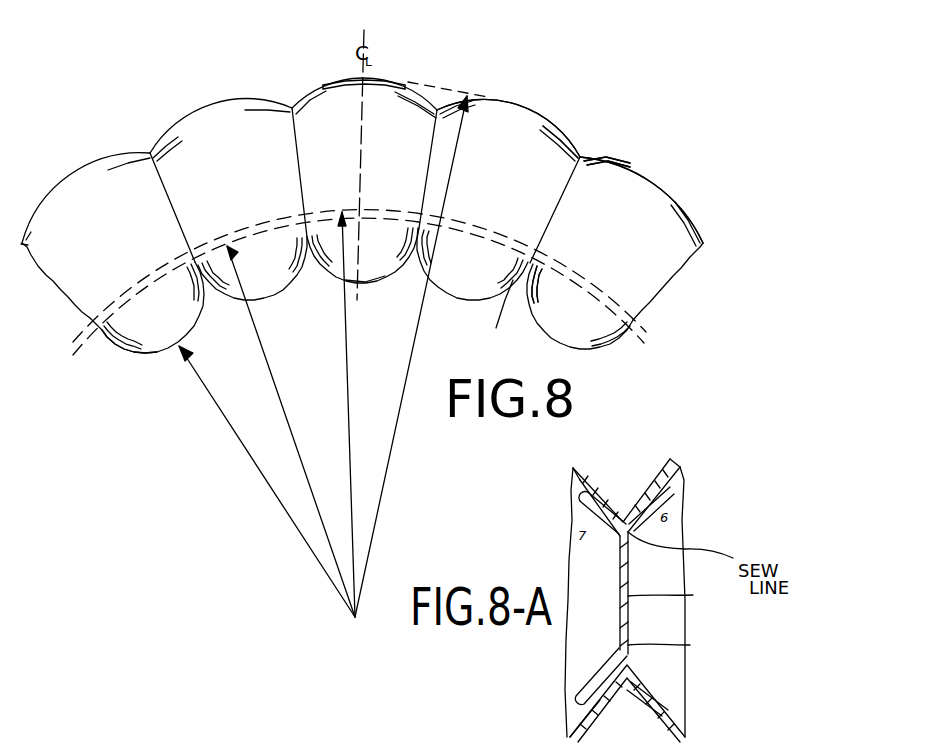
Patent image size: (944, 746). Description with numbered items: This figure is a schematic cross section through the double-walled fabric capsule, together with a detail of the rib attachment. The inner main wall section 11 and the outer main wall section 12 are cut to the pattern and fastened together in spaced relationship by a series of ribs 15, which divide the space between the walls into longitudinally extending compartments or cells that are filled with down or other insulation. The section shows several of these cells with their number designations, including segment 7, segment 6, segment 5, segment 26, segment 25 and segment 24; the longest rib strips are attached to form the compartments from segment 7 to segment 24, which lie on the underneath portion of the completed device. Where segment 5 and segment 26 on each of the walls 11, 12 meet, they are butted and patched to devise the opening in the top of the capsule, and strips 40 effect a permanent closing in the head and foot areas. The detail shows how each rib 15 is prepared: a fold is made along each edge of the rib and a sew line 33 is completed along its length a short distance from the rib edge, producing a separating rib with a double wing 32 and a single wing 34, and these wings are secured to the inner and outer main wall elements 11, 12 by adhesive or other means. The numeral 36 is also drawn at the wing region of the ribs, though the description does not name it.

In FIG. 8, the segment 5 is at (329, 110).
In FIG. 8, the segment 6 is at (217, 129).
In FIG. 8, the segment 7 is at (78, 197).
In FIG. 8, the inner main wall section 11 is at (151, 354).
In FIG. 8A, the inner main wall section 11 is at (592, 718).
In FIG. 8, the outer main wall section 12 is at (530, 107).
In FIG. 8A, the outer main wall section 12 is at (667, 464).
In FIG. 8, the rib 15 is at (298, 187).
In FIG. 8A, the rib 15 is at (673, 593).
In FIG. 8, the segment 24 is at (654, 190).
In FIG. 8, the segment 25 is at (521, 124).
In FIG. 8, the segment 26 is at (410, 110).
In FIG. 8, the double wing 32 is at (567, 137).
In FIG. 8A, the double wing 32 is at (607, 509).
In FIG. 8A, the sew line 33 is at (634, 660).
In FIG. 8, the single wing 34 is at (630, 163).
In FIG. 8A, the single wing 34 is at (640, 507).
In FIG. 8, the stitching 36 is at (583, 150).
In FIG. 8, the strip 40 is at (383, 76).